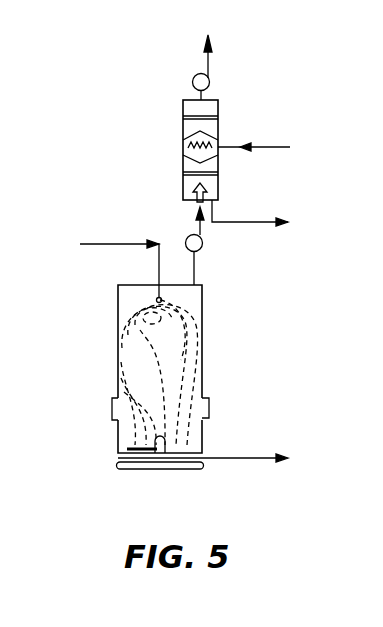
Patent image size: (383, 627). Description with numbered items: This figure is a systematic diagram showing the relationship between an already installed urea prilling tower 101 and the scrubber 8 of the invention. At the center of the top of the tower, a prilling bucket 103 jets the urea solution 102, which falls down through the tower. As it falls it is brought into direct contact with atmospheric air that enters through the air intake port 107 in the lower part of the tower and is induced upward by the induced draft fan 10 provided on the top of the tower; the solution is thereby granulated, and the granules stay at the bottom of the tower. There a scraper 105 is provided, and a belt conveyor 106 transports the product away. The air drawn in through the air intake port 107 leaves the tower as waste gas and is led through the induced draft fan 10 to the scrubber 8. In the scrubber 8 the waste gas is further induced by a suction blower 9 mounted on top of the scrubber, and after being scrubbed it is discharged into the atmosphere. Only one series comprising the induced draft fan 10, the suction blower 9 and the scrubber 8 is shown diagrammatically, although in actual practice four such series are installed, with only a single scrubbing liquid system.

The scrubber 8 is at (218, 107).
The suction blower 9 is at (209, 80).
The induced draft fan 10 is at (199, 250).
The urea prilling tower 101 is at (202, 364).
The urea solution 102 is at (101, 266).
The prilling bucket 103 is at (162, 300).
The scraper 105 is at (110, 423).
The belt conveyor 106 is at (104, 466).
The air intake port 107 is at (205, 430).